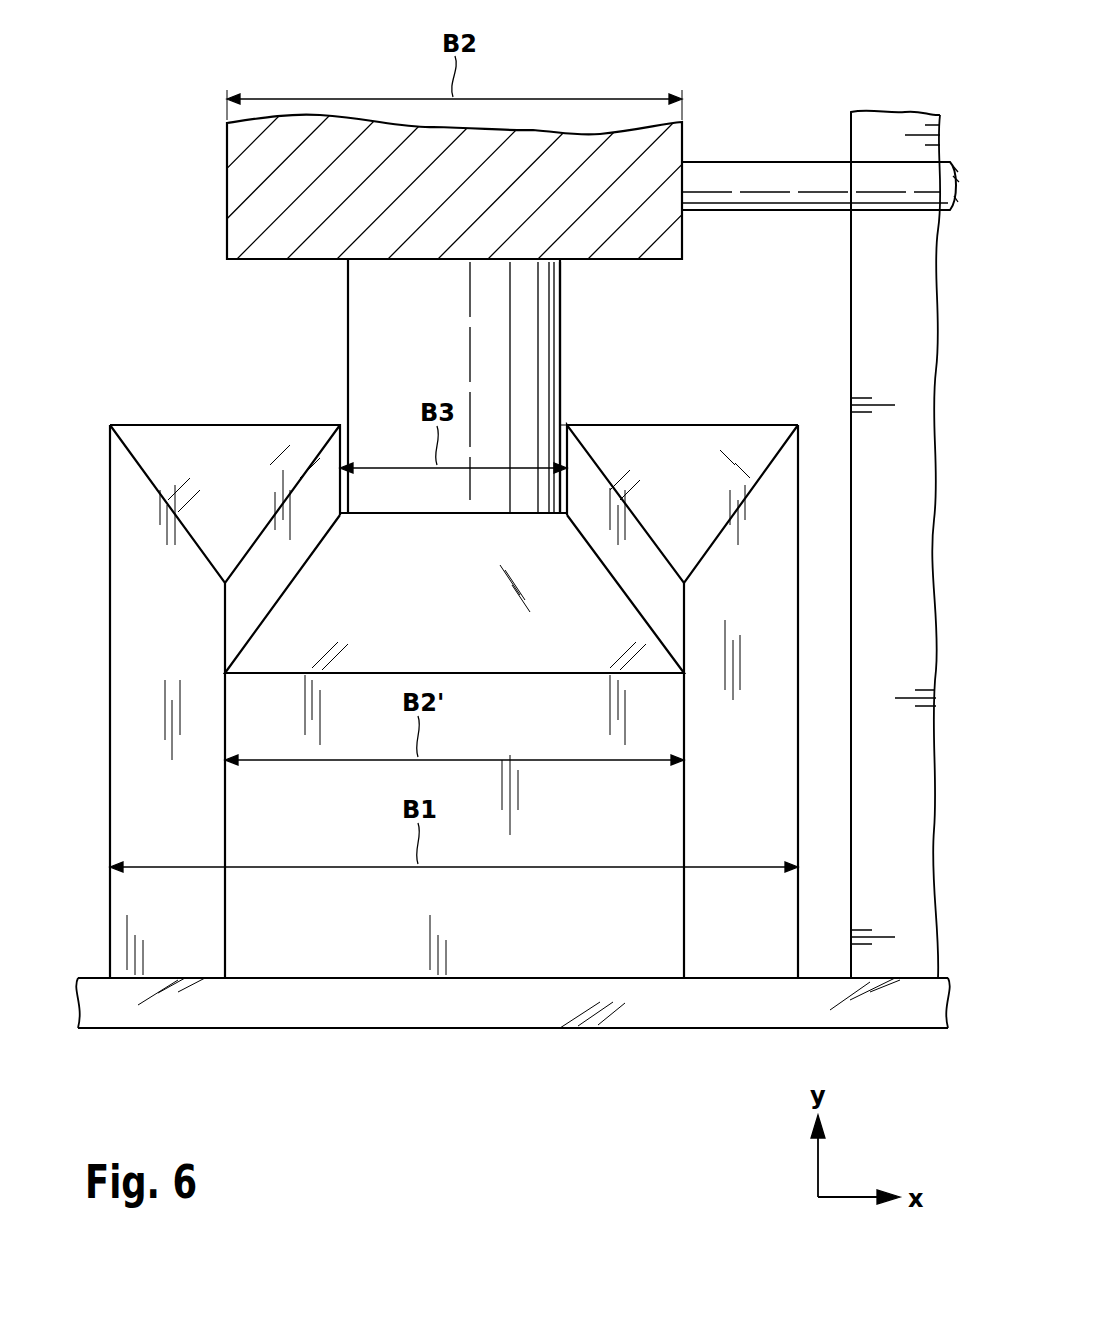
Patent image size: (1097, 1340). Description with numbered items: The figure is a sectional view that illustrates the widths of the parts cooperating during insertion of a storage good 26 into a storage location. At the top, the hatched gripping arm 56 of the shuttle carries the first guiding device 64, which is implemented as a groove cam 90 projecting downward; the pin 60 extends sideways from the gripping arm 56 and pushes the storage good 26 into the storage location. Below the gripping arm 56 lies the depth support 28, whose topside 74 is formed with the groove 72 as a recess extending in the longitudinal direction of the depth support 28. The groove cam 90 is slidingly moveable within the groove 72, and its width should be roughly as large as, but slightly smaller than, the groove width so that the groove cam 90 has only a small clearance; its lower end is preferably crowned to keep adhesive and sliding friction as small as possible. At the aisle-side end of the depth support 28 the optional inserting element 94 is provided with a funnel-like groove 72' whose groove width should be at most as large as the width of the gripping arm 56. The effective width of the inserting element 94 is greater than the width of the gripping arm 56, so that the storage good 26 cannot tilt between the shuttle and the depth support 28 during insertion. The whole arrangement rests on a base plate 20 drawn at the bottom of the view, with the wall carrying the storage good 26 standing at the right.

The base plate 20 is at (375, 1030).
The storage good 26 is at (851, 292).
The depth support 28 is at (110, 700).
The gripping arm 56 is at (222, 198).
The pin 60 is at (776, 180).
The first guiding device 64 is at (560, 315).
The groove 72 is at (590, 381).
The groove in the inserting element 72' is at (454, 594).
The topside 74 is at (178, 420).
The groove cam 90 is at (348, 327).
The inserting element 94 is at (511, 932).